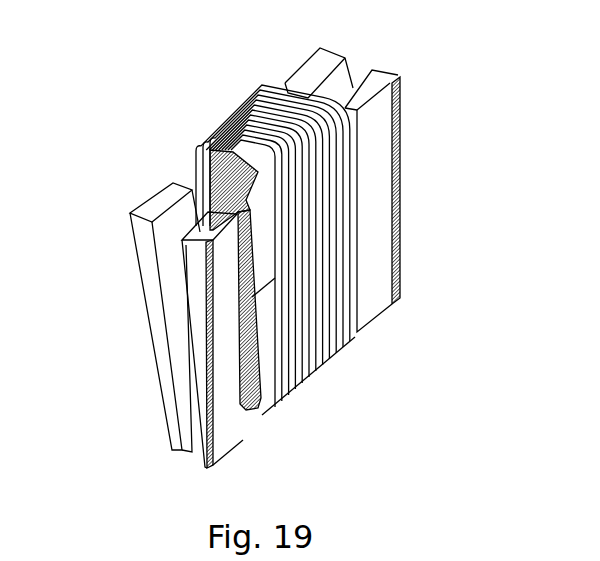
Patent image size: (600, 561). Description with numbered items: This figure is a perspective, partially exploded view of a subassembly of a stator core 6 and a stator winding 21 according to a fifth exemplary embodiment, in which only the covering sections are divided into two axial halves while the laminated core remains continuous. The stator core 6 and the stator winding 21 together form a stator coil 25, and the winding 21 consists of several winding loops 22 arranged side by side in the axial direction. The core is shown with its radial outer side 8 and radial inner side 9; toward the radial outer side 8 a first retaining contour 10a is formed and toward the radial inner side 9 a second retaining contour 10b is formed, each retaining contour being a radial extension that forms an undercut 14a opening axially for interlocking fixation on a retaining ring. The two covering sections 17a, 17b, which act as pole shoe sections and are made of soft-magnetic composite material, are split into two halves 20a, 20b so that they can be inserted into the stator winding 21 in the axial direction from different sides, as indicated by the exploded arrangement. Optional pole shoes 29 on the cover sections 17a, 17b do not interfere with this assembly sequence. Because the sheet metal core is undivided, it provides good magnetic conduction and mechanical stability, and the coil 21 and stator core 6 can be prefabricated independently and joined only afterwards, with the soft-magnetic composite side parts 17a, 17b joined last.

The stator core 6 is at (196, 186).
The radial outer side 8 is at (230, 151).
The radial inner side 9 is at (260, 409).
The first retaining contour 10a is at (243, 142).
The second retaining contour 10b is at (277, 412).
The undercut 14a is at (216, 148).
The first covering section 17a is at (200, 457).
The second covering section 17b is at (140, 288).
The first half 20a is at (116, 230).
The second half 20b is at (408, 113).
The stator winding 21 is at (325, 374).
The winding loop 22 is at (340, 357).
The stator coil 25 is at (130, 410).
The pole shoe 29 is at (200, 365).